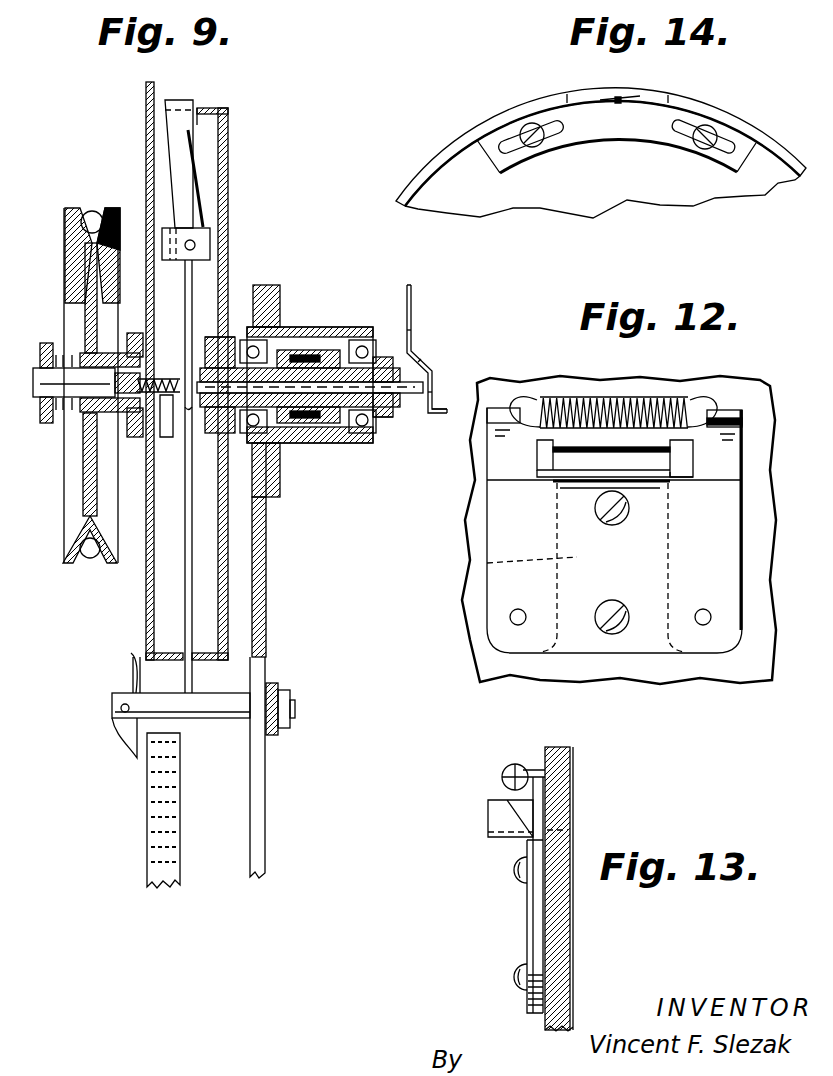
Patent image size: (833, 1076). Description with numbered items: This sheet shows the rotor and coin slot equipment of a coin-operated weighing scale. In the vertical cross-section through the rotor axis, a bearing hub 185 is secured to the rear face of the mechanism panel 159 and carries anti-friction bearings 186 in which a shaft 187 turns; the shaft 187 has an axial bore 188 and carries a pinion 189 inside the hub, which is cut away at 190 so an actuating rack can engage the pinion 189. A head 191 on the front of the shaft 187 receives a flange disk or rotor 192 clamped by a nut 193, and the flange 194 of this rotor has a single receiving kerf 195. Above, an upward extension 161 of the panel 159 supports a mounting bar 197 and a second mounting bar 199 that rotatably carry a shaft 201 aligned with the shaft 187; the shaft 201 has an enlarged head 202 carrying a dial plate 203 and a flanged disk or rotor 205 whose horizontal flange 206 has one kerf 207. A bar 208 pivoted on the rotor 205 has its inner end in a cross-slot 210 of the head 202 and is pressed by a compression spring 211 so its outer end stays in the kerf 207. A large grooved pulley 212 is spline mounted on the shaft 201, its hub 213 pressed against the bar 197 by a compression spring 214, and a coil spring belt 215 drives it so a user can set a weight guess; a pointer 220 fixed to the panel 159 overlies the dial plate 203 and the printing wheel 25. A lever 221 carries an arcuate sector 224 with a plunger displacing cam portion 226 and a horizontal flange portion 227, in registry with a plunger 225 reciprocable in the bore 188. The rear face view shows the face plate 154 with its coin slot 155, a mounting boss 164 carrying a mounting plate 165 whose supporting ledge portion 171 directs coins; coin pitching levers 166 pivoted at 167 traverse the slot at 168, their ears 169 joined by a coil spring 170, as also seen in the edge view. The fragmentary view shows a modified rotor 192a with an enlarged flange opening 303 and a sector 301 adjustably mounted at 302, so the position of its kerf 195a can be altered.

In FIG. 9, the printing wheel 25 is at (150, 795).
In FIG. 12, the face plate 154 is at (470, 648).
In FIG. 13, the face plate 154 is at (560, 790).
In FIG. 12, the coin slot 155 is at (580, 486).
In FIG. 13, the coin slot 155 is at (567, 820).
In FIG. 9, the panel 159 is at (258, 817).
In FIG. 9, the upward extension 161 is at (236, 335).
In FIG. 12, the mounting boss 164 is at (553, 578).
In FIG. 12, the mounting plate 165 is at (575, 638).
In FIG. 13, the mounting plate 165 is at (533, 908).
In FIG. 12, the coin pitching lever 166 is at (553, 580).
In FIG. 13, the coin pitching lever 166 is at (540, 928).
In FIG. 12, the pivot 167 is at (515, 624).
In FIG. 12, the slot traversing portion 168 is at (673, 458).
In FIG. 12, the ear 169 is at (497, 412).
In FIG. 13, the ear 169 is at (502, 781).
In FIG. 12, the coil spring 170 is at (583, 397).
In FIG. 13, the coil spring 170 is at (505, 768).
In FIG. 12, the supporting ledge portion 171 is at (548, 466).
In FIG. 13, the supporting ledge portion 171 is at (498, 840).
In FIG. 9, the bearing hub 185 is at (318, 327).
In FIG. 9, the anti-friction bearing 186 is at (273, 457).
In FIG. 9, the shaft 187 is at (330, 368).
In FIG. 9, the axial bore 188 is at (375, 338).
In FIG. 9, the pinion 189 is at (298, 357).
In FIG. 9, the cut-away 190 is at (320, 433).
In FIG. 9, the head 191 is at (236, 335).
In FIG. 9, the flange disk or rotor 192 is at (229, 183).
In FIG. 14, the rotor 192a is at (435, 165).
In FIG. 9, the nut 193 is at (264, 470).
In FIG. 9, the flange 194 is at (212, 125).
In FIG. 9, the kerf 195 is at (210, 110).
In FIG. 14, the kerf 195a is at (627, 100).
In FIG. 9, the mounting bar 197 is at (133, 333).
In FIG. 9, the second mounting bar 199 is at (85, 425).
In FIG. 9, the shaft 201 is at (74, 382).
In FIG. 9, the enlarged head 202 is at (175, 410).
In FIG. 9, the dial plate 203 is at (150, 94).
In FIG. 9, the flanged disk or rotor 205 is at (166, 592).
In FIG. 9, the horizontal flange 206 is at (165, 650).
In FIG. 9, the kerf 207 is at (178, 110).
In FIG. 9, the bar 208 is at (180, 165).
In FIG. 9, the cross-slot 210 is at (140, 438).
In FIG. 9, the compression spring 211 is at (157, 427).
In FIG. 9, the grooved pulley 212 is at (77, 247).
In FIG. 9, the hub 213 is at (117, 427).
In FIG. 9, the compression spring 214 is at (63, 347).
In FIG. 9, the coil spring belt 215 is at (97, 211).
In FIG. 9, the pointer 220 is at (130, 680).
In FIG. 9, the lever 221 is at (430, 392).
In FIG. 9, the arcuate sector 224 is at (410, 290).
In FIG. 9, the plunger 225 is at (412, 345).
In FIG. 9, the plunger displacing cam portion 226 is at (420, 363).
In FIG. 9, the horizontal flange portion 227 is at (440, 415).
In FIG. 14, the sector 301 is at (660, 125).
In FIG. 14, the adjustable mounting 302 is at (537, 150).
In FIG. 14, the enlarged flange opening 303 is at (578, 96).